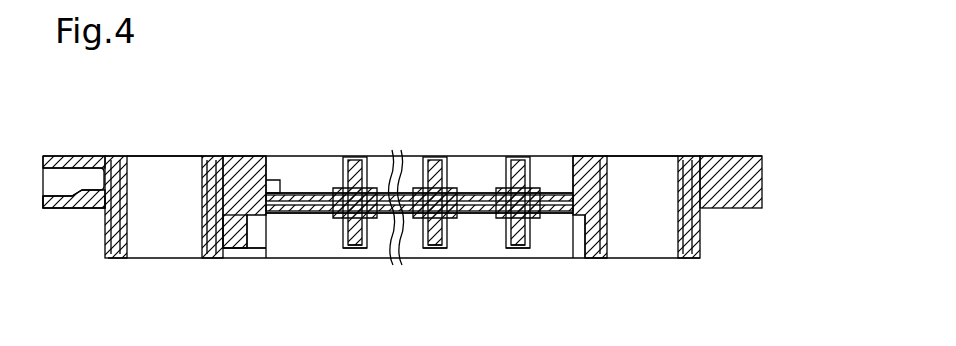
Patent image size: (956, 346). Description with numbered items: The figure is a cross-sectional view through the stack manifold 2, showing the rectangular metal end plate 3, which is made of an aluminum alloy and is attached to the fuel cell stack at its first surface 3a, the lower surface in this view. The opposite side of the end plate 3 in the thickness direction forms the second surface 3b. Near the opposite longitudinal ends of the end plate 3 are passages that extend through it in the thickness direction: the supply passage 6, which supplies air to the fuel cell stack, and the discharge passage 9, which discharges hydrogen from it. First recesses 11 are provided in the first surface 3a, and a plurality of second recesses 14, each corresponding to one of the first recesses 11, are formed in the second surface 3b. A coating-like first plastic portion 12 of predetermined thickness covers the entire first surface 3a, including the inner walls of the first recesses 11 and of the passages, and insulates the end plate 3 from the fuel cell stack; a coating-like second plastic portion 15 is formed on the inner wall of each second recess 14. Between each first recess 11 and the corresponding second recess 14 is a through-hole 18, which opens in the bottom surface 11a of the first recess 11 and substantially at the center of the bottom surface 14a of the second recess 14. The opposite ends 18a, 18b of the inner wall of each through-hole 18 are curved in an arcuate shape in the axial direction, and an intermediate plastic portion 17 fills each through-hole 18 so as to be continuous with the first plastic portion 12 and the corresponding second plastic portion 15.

The stack manifold 2 is at (672, 103).
The end plate 3 is at (726, 157).
The first surface 3a is at (729, 208).
The second surface 3b is at (230, 153).
The supply passage 6 is at (127, 200).
The discharge passage 9 is at (607, 197).
The first recess 11 is at (266, 258).
The bottom surface of first recess 11a is at (330, 252).
The first plastic portion 12 is at (202, 233).
The second recess 14 is at (266, 156).
The bottom surface of second recess 14a is at (295, 157).
The second plastic portion 15 is at (336, 157).
The intermediate plastic portion 17 is at (300, 194).
The through-hole 18 is at (302, 215).
The end of inner wall of through-hole 18a is at (320, 156).
The end of inner wall of through-hole 18b is at (314, 260).